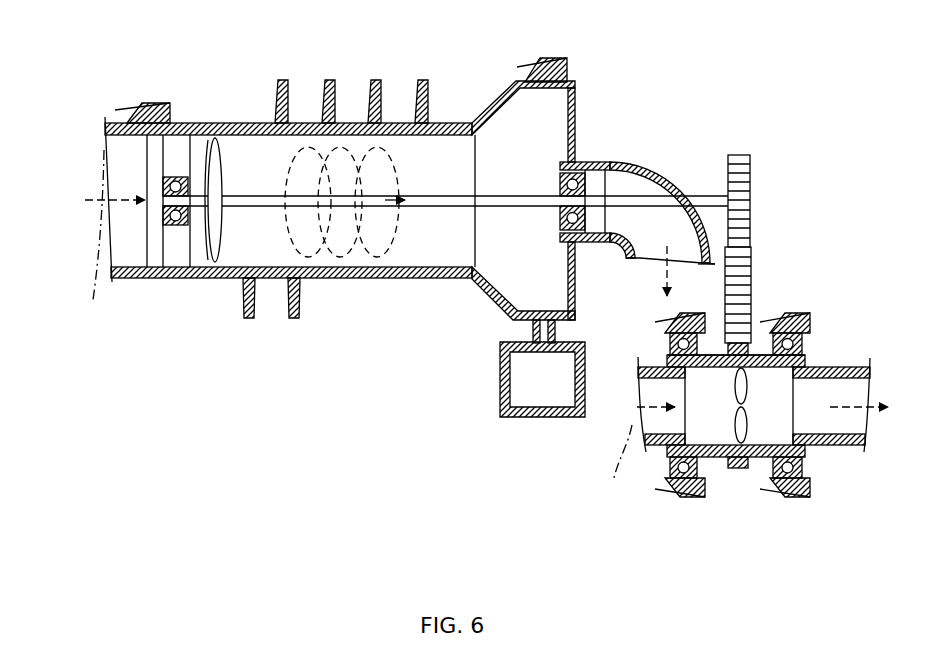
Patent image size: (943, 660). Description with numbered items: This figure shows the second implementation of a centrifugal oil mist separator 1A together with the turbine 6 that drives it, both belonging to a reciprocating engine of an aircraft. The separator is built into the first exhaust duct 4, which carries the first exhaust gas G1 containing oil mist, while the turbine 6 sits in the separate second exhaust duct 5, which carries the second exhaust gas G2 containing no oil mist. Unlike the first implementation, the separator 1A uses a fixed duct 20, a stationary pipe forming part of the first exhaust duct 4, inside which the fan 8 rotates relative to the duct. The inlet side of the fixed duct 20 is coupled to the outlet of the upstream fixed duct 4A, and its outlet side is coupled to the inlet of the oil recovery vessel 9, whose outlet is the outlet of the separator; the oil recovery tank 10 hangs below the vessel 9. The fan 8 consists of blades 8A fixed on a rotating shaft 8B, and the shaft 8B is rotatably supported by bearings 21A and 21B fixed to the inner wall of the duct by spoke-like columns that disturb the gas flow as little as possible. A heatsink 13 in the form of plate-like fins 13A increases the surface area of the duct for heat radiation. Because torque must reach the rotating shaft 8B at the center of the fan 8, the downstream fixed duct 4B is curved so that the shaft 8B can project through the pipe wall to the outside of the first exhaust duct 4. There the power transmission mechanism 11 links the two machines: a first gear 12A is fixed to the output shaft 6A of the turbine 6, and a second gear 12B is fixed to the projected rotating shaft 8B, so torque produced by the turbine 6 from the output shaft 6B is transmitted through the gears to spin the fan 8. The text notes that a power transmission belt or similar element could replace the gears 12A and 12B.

The centrifugal oil mist separator 1A is at (307, 404).
The first exhaust duct 4 is at (666, 184).
The fixed duct 4A is at (132, 279).
The fixed duct 4B is at (622, 161).
The second exhaust duct 5 is at (657, 450).
The turbine 6 is at (715, 461).
The output shaft 6A is at (749, 393).
The output shaft 6B is at (752, 355).
The fan 8 is at (222, 228).
The blades 8A is at (222, 170).
The rotating shaft 8B is at (438, 194).
The oil recovery vessel 9 is at (575, 281).
The oil recovery tank 10 is at (500, 381).
The power transmission mechanism 11 is at (756, 264).
The first gear 12A is at (736, 469).
The second gear 12B is at (750, 170).
The heatsink 13 is at (292, 318).
The fin 13A is at (246, 305).
The fixed duct 20 is at (237, 123).
The bearing 21A is at (163, 184).
The bearing 21B is at (560, 186).
The first exhaust gas G1 is at (111, 241).
The second exhaust gas G2 is at (615, 466).